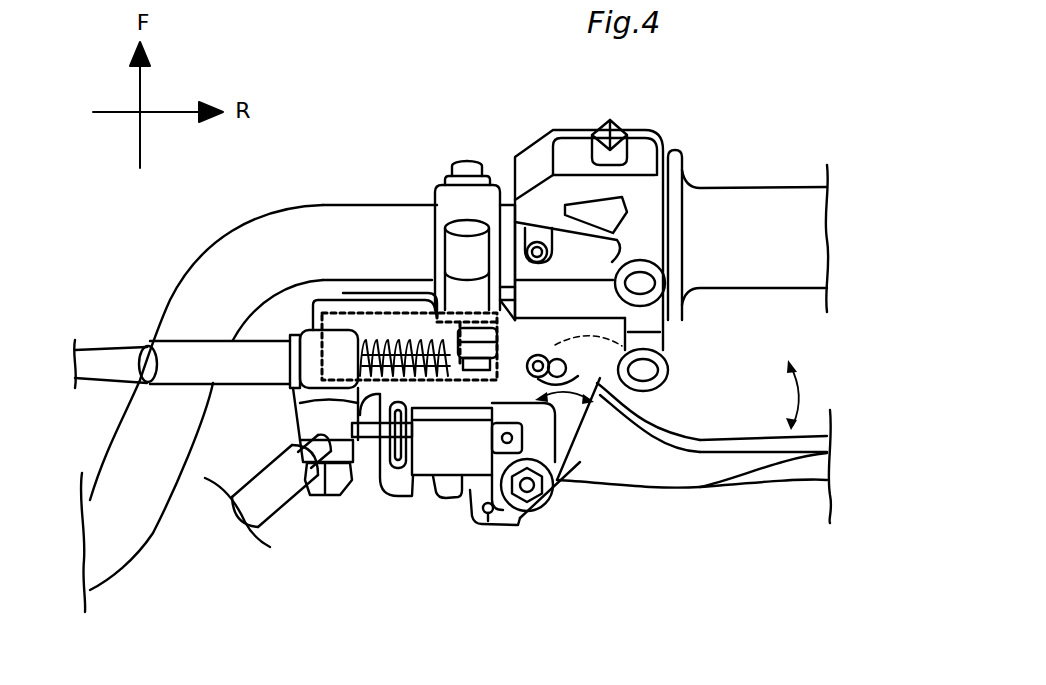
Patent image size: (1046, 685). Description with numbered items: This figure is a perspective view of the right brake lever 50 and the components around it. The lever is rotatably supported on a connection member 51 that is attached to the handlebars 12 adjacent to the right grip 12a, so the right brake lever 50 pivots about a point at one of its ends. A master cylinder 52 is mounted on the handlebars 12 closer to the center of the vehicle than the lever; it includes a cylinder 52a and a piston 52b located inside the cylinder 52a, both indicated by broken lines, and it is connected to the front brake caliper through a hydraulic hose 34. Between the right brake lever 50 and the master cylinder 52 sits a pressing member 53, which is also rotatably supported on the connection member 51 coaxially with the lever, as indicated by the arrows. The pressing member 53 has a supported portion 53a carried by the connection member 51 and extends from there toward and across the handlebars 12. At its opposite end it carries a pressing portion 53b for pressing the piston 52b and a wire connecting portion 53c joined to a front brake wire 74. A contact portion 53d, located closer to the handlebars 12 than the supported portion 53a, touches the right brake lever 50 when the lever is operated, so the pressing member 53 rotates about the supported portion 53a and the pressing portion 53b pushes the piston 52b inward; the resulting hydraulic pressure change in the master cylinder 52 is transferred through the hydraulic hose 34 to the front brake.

The handlebars 12 is at (178, 262).
The right grip 12a is at (742, 200).
The front brake wire 74 is at (103, 362).
The master cylinder 52 is at (336, 304).
The cylinder 52a is at (371, 313).
The piston 52b is at (437, 392).
The connection member 51 is at (467, 196).
The pressing member 53 is at (516, 525).
The supported portion 53a is at (555, 490).
The pressing portion 53b is at (668, 368).
The wire connecting portion 53c is at (603, 390).
The contact portion 53d is at (600, 422).
The right brake lever 50 is at (783, 474).
The hydraulic hose 34 is at (252, 507).